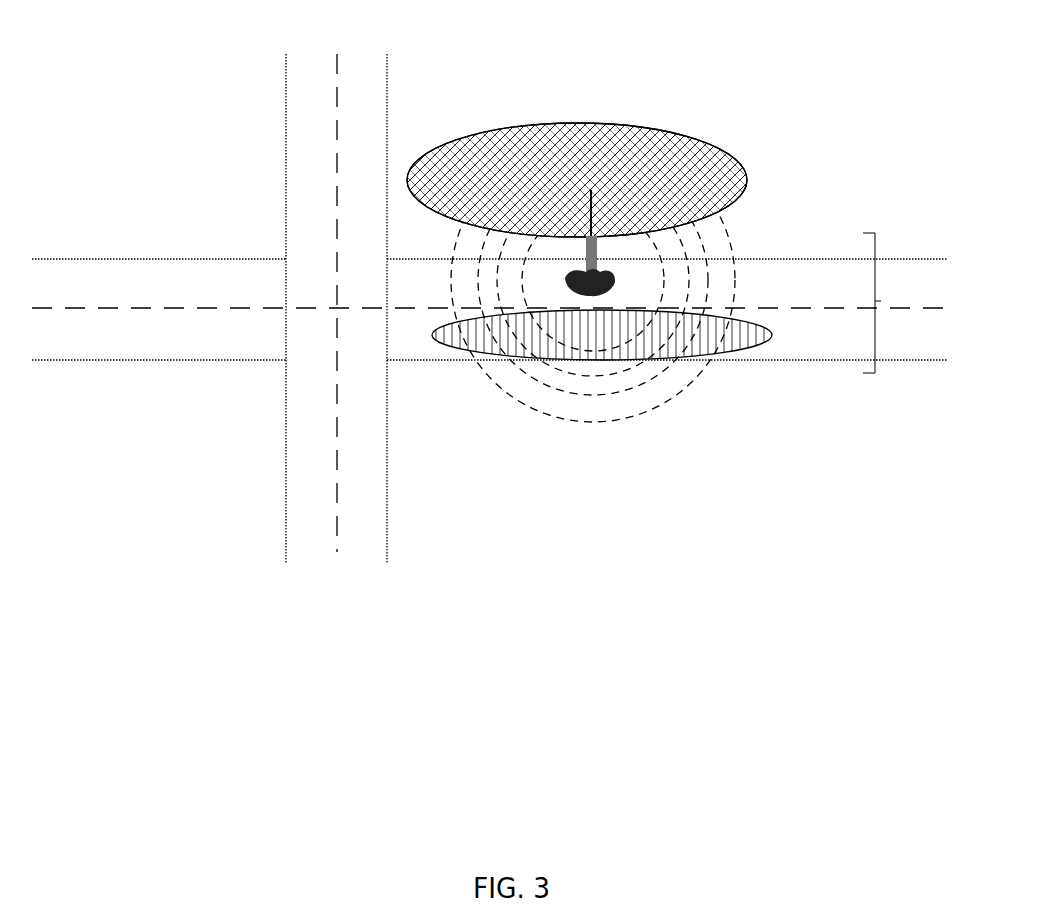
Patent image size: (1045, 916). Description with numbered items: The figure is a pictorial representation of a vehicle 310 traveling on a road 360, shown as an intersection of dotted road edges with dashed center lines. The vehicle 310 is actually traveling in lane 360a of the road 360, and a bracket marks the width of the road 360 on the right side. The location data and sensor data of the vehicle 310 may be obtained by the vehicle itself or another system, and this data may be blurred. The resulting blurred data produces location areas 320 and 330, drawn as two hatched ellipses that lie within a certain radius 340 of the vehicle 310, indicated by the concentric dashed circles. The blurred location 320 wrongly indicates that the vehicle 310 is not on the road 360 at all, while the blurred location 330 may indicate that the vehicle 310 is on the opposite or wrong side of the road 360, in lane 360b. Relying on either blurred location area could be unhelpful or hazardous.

The vehicle 310 is at (593, 285).
The blurred location area 320 is at (707, 153).
The blurred location area 330 is at (750, 338).
The radius 340 is at (468, 273).
The road 360 is at (878, 301).
The lane 360a is at (244, 288).
The lane 360b is at (248, 338).